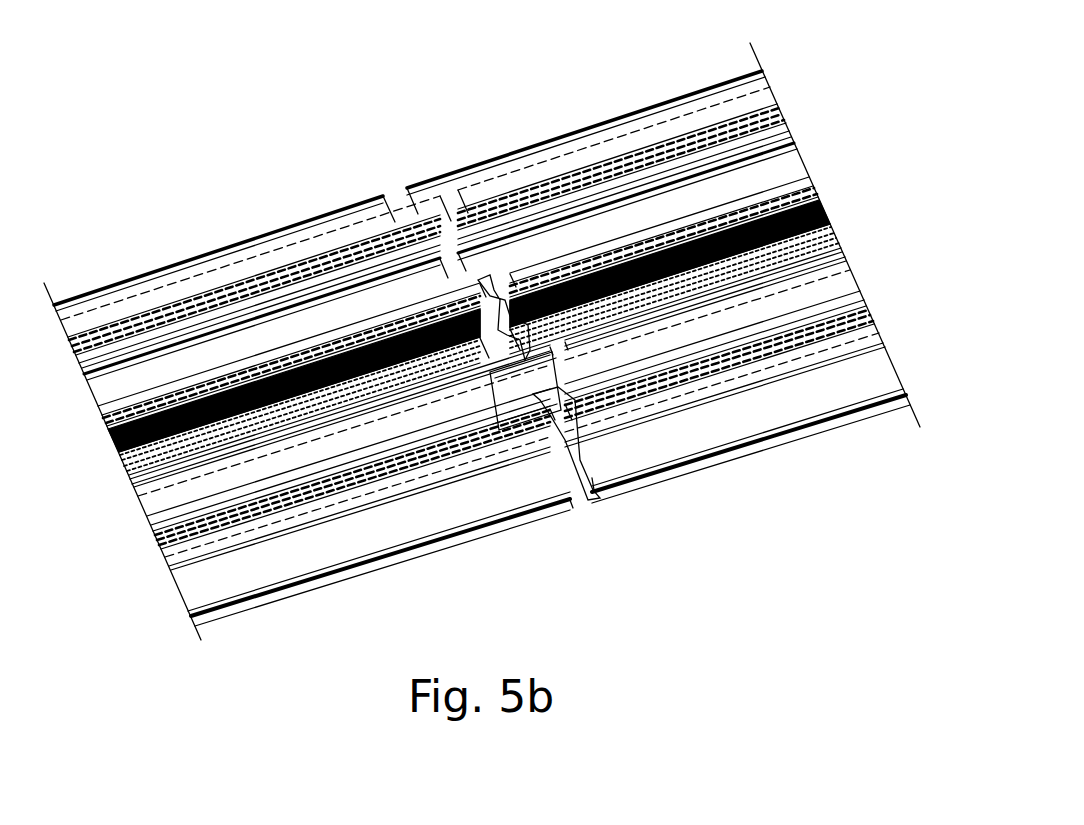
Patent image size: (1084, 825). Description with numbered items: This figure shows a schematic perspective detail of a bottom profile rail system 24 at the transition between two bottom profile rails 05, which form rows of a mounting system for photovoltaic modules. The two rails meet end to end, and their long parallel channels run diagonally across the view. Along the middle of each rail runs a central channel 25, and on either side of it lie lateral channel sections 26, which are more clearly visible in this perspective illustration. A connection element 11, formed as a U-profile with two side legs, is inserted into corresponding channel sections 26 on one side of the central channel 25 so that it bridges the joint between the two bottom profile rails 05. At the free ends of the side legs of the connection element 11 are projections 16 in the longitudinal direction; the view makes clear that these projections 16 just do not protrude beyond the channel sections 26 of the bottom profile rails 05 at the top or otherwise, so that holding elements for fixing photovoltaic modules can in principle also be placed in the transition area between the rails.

The bottom profile rail 05 is at (757, 420).
The connection element 11 is at (473, 405).
The projection 16 is at (557, 390).
The bottom profile rail system 24 is at (280, 650).
The central channel 25 is at (233, 385).
The channel section 26 is at (300, 507).